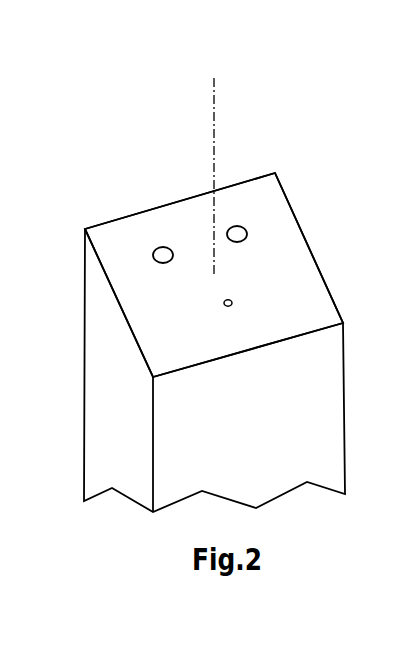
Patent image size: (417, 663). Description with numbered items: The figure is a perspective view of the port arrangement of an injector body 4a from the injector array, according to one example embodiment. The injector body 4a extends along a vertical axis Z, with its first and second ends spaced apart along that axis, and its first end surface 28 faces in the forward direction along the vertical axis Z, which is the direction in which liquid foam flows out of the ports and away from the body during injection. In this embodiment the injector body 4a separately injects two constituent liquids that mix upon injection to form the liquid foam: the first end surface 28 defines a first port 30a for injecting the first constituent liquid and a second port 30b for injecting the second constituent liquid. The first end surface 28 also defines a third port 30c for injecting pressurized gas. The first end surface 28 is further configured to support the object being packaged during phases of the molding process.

The injector body 4a is at (185, 170).
The vertical axis Z is at (214, 106).
The first end surface 28 is at (262, 265).
The first port 30a is at (160, 252).
The second port 30b is at (238, 226).
The third port 30c is at (232, 302).